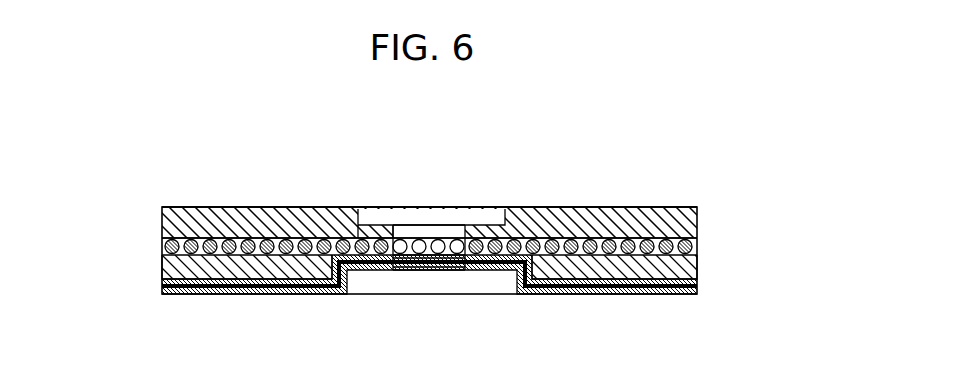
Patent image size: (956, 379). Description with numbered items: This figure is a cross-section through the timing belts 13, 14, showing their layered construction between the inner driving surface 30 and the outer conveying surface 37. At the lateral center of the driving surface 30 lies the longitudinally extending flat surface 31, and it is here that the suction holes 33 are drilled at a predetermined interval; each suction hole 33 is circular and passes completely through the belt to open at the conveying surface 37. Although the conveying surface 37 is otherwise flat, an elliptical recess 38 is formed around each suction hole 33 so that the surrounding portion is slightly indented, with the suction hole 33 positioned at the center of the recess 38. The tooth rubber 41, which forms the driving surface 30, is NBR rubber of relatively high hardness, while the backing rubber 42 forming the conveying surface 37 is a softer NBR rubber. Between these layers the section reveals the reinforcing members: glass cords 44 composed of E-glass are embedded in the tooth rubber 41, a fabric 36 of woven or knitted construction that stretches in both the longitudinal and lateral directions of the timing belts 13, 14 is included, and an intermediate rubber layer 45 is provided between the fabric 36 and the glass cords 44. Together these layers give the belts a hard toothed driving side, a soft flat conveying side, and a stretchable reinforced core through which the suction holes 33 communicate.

The timing belt 13 is at (429, 217).
The timing belt 14 is at (630, 203).
The driving surface 30 is at (546, 294).
The flat surface 31 is at (365, 268).
The suction hole 33 is at (441, 228).
The fabric 36 is at (697, 290).
The conveying surface 37 is at (219, 206).
The recess 38 is at (373, 233).
The tooth rubber 41 is at (185, 266).
The backing rubber 42 is at (185, 224).
The glass cords 44 is at (241, 258).
The intermediate rubber layer 45 is at (697, 281).